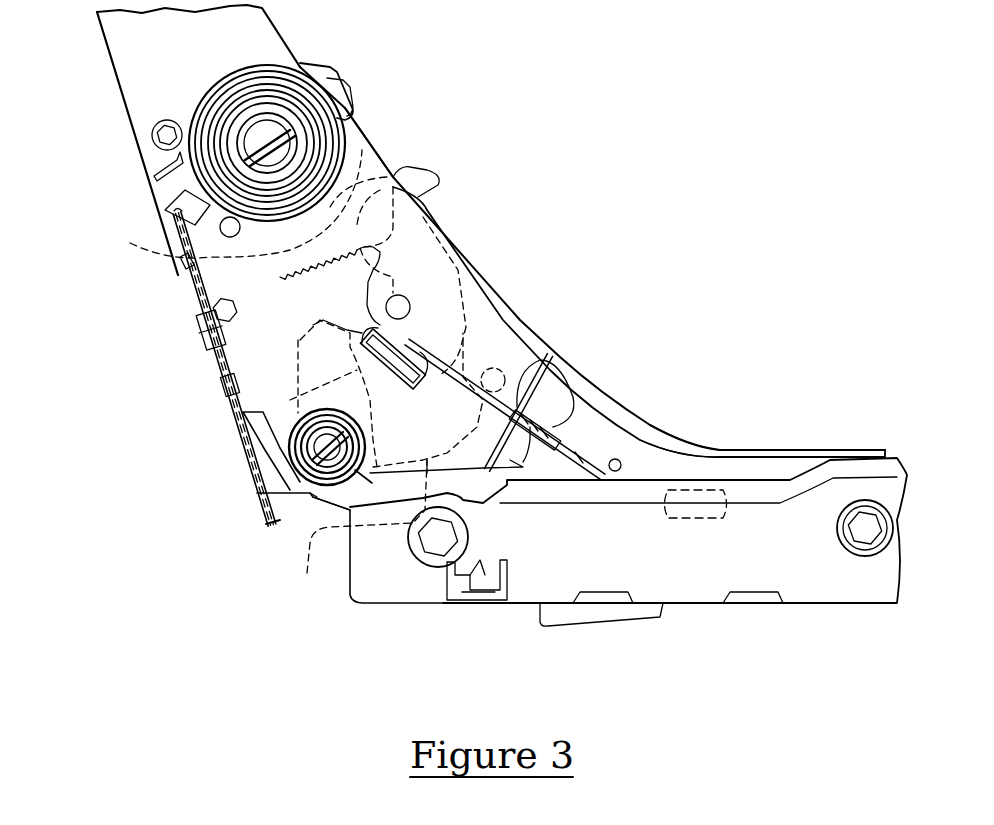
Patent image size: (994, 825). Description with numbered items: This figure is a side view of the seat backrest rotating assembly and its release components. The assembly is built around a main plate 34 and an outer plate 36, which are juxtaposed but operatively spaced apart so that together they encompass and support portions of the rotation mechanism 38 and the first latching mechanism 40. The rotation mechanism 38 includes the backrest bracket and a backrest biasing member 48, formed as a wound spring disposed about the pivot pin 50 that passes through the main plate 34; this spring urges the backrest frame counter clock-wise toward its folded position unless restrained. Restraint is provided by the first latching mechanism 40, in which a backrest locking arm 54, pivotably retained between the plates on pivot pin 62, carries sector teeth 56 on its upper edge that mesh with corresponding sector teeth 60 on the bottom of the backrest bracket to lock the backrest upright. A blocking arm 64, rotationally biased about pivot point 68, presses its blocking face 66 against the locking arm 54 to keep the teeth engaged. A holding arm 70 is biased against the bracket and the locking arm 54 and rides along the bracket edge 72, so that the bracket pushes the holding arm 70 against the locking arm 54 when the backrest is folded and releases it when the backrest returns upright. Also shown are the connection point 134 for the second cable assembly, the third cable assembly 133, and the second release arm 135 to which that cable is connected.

The main plate 34 is at (723, 445).
The outer plate 36 is at (587, 407).
The rotation mechanism 38 is at (357, 87).
The first latching mechanism 40 is at (490, 260).
The backrest biasing member 48 is at (117, 78).
The pivot pin 50 is at (270, 112).
The backrest locking arm 54 is at (177, 277).
The sector teeth 56 is at (173, 257).
The sector teeth 60 is at (313, 323).
The pivot pin 62 is at (213, 310).
The blocking arm 64 is at (243, 413).
The blocking face 66 is at (218, 382).
The pivot point 68 is at (310, 495).
The holding arm 70 is at (510, 307).
The edge 72 is at (433, 192).
The third cable assembly 133 is at (550, 353).
The connection point 134 is at (165, 209).
The second release arm 135 is at (355, 532).